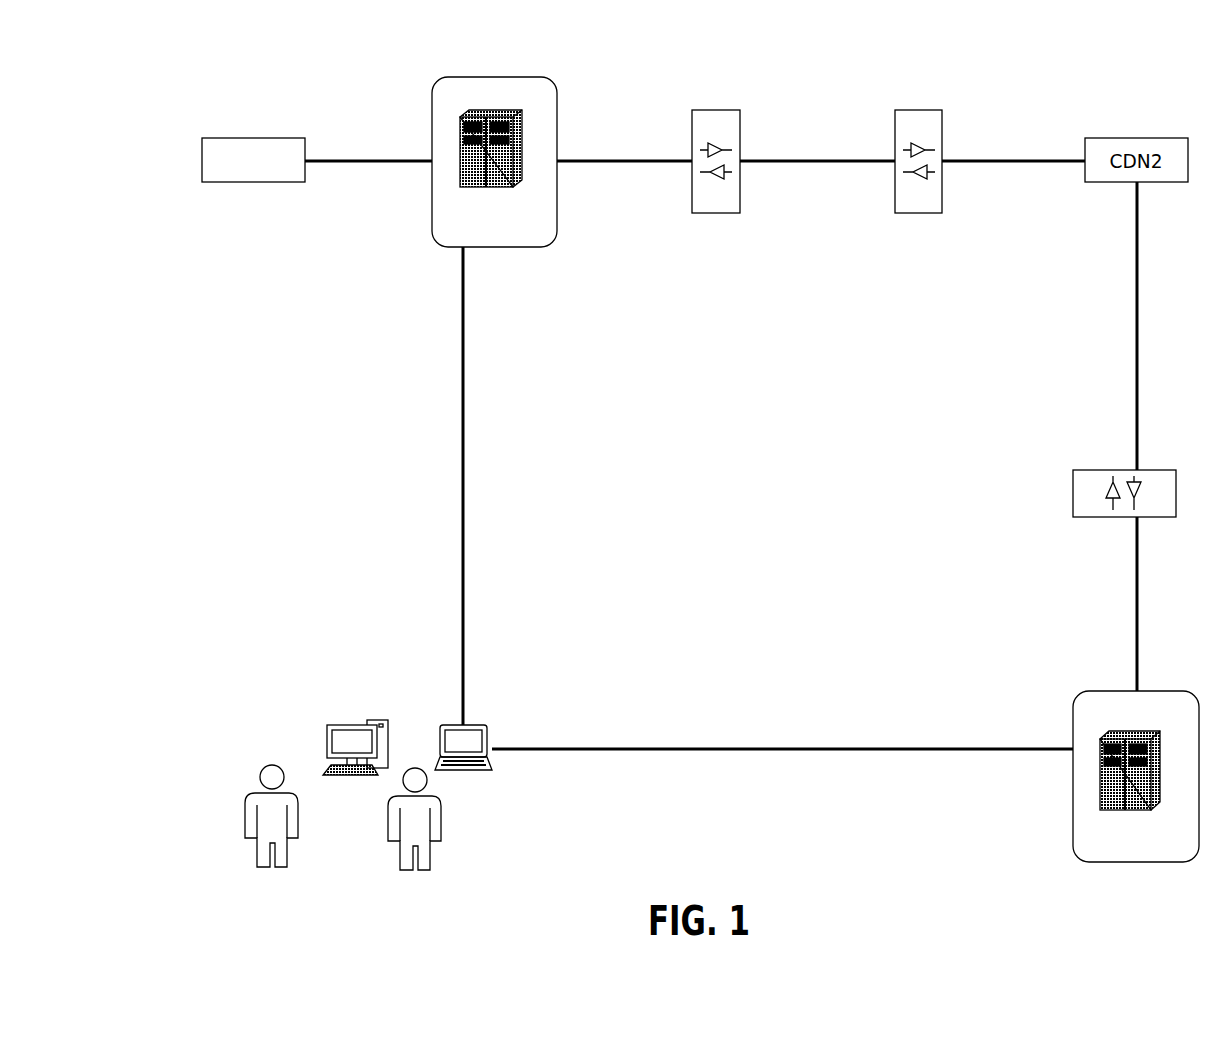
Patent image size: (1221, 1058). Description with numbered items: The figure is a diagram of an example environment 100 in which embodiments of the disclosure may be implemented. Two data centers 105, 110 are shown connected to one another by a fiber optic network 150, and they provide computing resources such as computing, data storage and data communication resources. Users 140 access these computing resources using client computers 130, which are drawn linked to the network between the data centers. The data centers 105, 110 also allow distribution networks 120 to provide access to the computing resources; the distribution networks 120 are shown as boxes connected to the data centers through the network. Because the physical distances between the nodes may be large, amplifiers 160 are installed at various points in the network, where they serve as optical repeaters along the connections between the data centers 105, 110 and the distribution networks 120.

The environment 100 is at (322, 66).
The data center 105 is at (495, 150).
The data center 110 is at (1137, 764).
The distribution network 120 is at (202, 138).
The client computer 130 is at (327, 745).
The user 140 is at (258, 787).
The fiber optic network 150 is at (461, 468).
The amplifier 160 is at (713, 110).